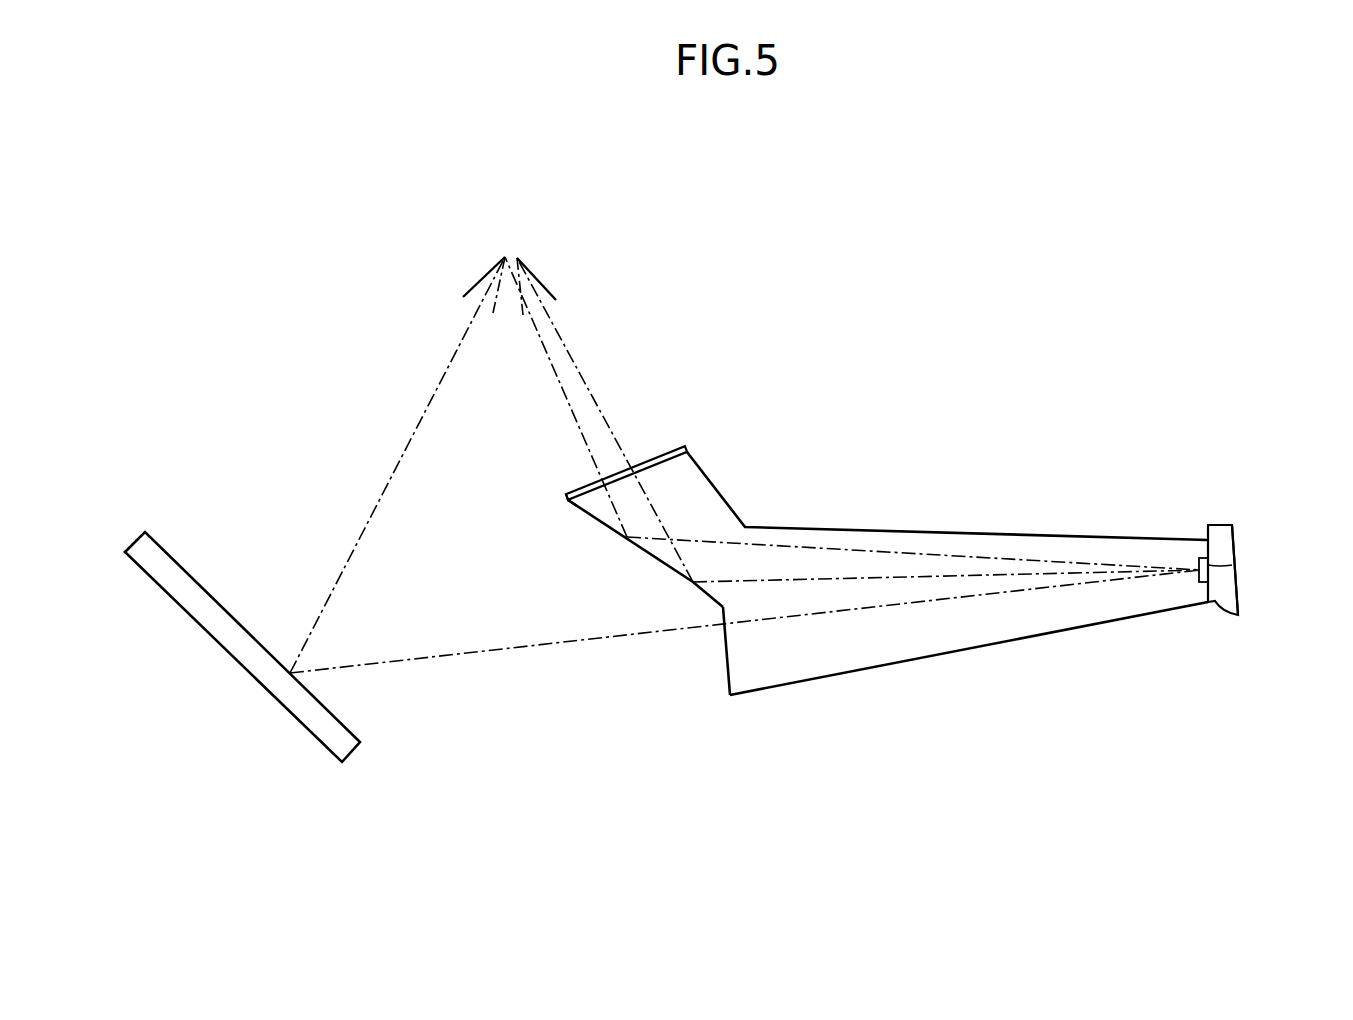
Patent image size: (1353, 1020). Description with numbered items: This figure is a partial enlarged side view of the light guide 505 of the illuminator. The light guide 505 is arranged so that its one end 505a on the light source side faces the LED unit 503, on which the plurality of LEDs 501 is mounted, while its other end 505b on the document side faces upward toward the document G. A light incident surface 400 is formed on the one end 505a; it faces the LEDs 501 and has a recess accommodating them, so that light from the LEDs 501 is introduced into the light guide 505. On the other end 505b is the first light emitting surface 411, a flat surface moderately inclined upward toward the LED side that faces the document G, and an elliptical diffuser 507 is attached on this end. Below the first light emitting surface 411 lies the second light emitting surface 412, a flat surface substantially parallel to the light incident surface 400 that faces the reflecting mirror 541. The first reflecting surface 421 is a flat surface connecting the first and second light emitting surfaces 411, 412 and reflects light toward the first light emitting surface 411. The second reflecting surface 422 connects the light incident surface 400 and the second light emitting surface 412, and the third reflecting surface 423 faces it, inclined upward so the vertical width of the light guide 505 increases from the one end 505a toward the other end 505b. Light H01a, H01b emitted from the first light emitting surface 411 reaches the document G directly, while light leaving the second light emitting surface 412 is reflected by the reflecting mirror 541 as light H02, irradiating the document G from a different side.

The document G is at (510, 244).
The light reflected by the reflecting mirror H02 is at (398, 458).
The light emitted from the first light emitting surface H01a is at (567, 398).
The light emitted from the first light emitting surface H01b is at (558, 337).
The light guide 505 is at (890, 531).
The one end 505a is at (1207, 540).
The other end 505b is at (667, 450).
The elliptical diffuser 507 is at (686, 450).
The first light emitting surface 411 is at (570, 495).
The second light emitting surface 412 is at (725, 668).
The first reflecting surface 421 is at (647, 548).
The second reflecting surface 422 is at (1000, 648).
The third reflecting surface 423 is at (1013, 537).
The LED 501 is at (1233, 562).
The LED unit 503 is at (1223, 522).
The light incident surface 400 is at (1210, 590).
The reflecting mirror 541 is at (350, 730).